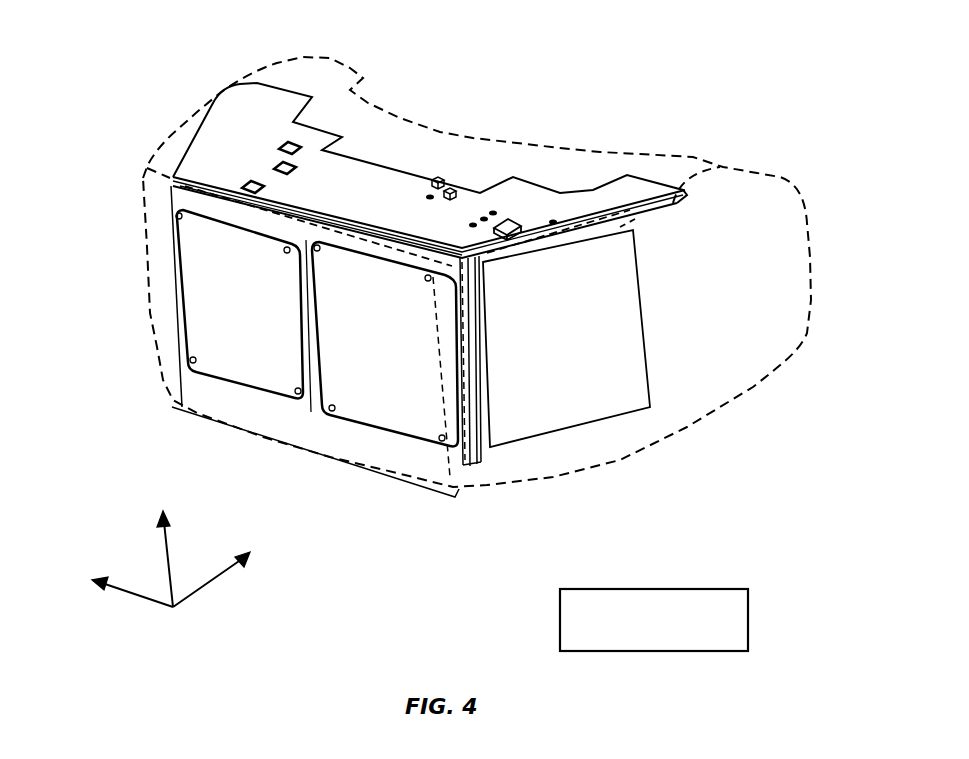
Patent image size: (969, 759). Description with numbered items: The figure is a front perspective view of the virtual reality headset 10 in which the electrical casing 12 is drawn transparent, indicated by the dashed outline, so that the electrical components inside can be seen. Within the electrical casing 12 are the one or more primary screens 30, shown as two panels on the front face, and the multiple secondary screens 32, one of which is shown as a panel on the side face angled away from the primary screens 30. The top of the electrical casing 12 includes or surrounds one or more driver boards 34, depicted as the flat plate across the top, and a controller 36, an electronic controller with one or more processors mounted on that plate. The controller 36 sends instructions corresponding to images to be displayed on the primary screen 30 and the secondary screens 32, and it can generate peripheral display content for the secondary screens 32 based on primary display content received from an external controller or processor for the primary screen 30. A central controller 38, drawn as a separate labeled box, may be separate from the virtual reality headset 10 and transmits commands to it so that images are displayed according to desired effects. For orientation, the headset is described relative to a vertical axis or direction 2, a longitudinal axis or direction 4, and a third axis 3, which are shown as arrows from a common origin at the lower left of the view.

The virtual reality headset 10 is at (590, 67).
The electrical casing 12 is at (319, 456).
The primary screen 30 is at (250, 300).
The secondary screen 32 is at (573, 337).
The driver board 34 is at (403, 170).
The controller 36 is at (513, 220).
The central controller 38 is at (656, 588).
The vertical axis or direction 2 is at (172, 553).
The lateral axis direction 3 is at (133, 595).
The longitudinal axis or direction 4 is at (208, 583).